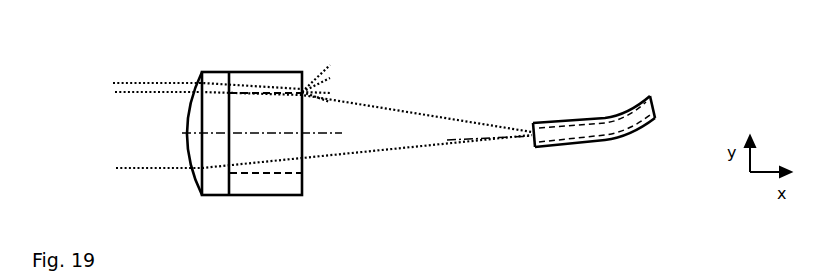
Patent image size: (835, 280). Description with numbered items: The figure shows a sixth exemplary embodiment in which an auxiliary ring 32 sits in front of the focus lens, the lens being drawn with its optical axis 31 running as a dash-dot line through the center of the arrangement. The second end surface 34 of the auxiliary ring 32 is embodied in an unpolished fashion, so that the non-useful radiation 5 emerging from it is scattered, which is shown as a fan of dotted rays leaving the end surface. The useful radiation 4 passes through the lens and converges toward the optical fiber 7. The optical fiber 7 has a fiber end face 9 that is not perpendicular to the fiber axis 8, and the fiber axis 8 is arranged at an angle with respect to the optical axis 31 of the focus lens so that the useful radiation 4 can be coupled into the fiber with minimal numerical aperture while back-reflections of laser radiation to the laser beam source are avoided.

The useful radiation 4 is at (482, 125).
The non-useful radiation 5 is at (332, 75).
The optical fiber 7 is at (563, 120).
The fiber axis 8 is at (455, 140).
The fiber end face 9 is at (533, 140).
The optical axis 31 is at (342, 133).
The auxiliary ring 32 is at (272, 195).
The second end surface 34 is at (304, 181).